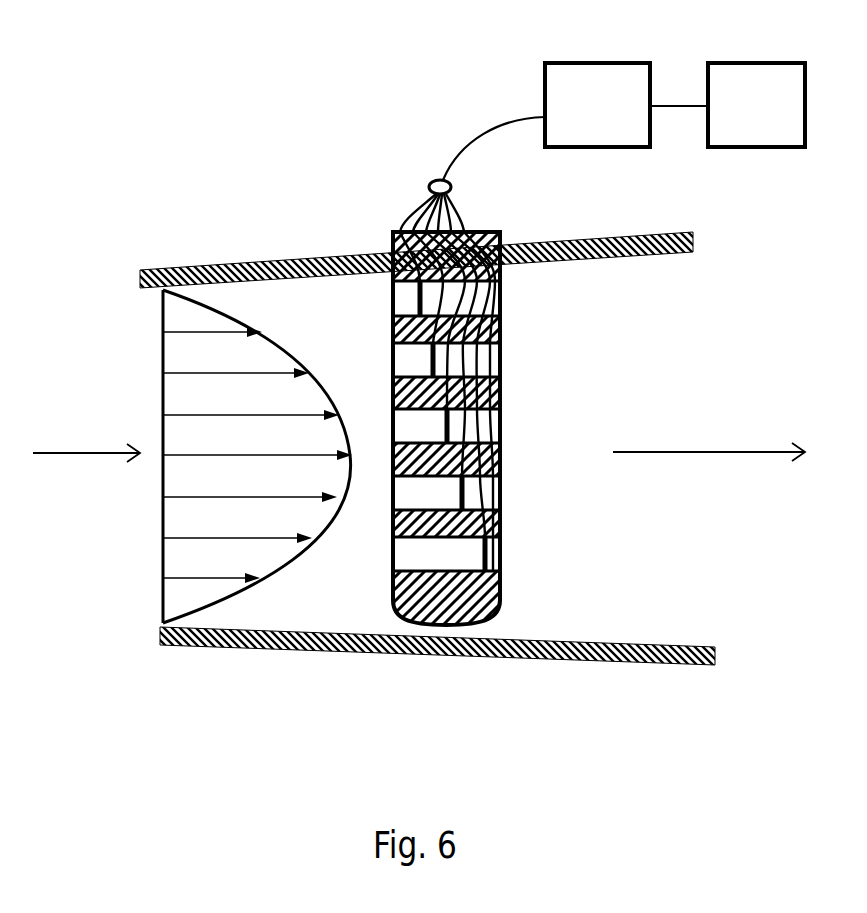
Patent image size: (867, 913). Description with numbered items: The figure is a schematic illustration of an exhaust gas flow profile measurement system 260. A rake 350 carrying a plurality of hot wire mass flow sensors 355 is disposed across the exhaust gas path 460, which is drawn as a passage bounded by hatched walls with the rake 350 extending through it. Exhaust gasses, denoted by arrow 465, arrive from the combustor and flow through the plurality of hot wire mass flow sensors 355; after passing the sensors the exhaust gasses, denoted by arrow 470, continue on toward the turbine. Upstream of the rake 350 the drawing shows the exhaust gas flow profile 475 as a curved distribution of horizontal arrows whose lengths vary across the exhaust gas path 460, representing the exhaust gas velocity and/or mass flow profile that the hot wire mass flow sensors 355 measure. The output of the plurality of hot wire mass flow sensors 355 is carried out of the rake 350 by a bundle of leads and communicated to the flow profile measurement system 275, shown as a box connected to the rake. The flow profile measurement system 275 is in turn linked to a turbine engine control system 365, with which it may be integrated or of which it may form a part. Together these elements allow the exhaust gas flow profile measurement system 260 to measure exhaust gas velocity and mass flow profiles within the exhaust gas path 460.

The exhaust gas flow profile measurement system 260 is at (330, 95).
The flow profile measurement system 275 is at (598, 62).
The turbine engine control system 365 is at (757, 62).
The rake 350 is at (393, 330).
The hot wire mass flow sensors 355 is at (500, 552).
The exhaust gas path 460 is at (623, 548).
The exhaust gasses (inflow arrow) 465 is at (87, 452).
The exhaust gasses (outflow arrow) 470 is at (709, 441).
The exhaust gas flow profile 475 is at (193, 358).